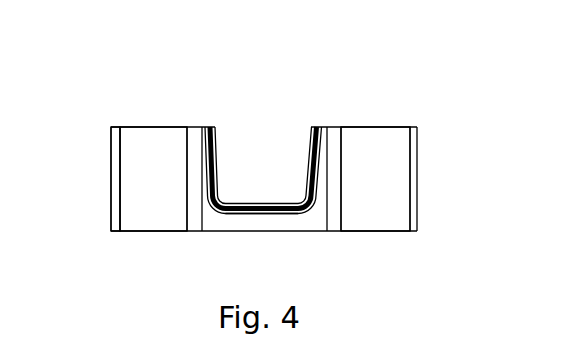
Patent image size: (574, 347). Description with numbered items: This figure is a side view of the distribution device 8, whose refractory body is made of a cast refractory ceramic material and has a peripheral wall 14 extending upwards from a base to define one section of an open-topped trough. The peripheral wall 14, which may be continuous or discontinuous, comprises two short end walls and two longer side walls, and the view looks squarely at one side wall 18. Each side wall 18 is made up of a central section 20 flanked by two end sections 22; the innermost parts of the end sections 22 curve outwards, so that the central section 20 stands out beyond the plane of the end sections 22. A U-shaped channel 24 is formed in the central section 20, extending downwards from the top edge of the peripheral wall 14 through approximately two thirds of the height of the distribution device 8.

The distribution device 8 is at (401, 98).
The peripheral wall 14 is at (417, 165).
The side wall 18 is at (128, 160).
The central section 20 is at (283, 222).
The end sections 22 is at (392, 270).
The U-shaped channel 24 is at (218, 137).